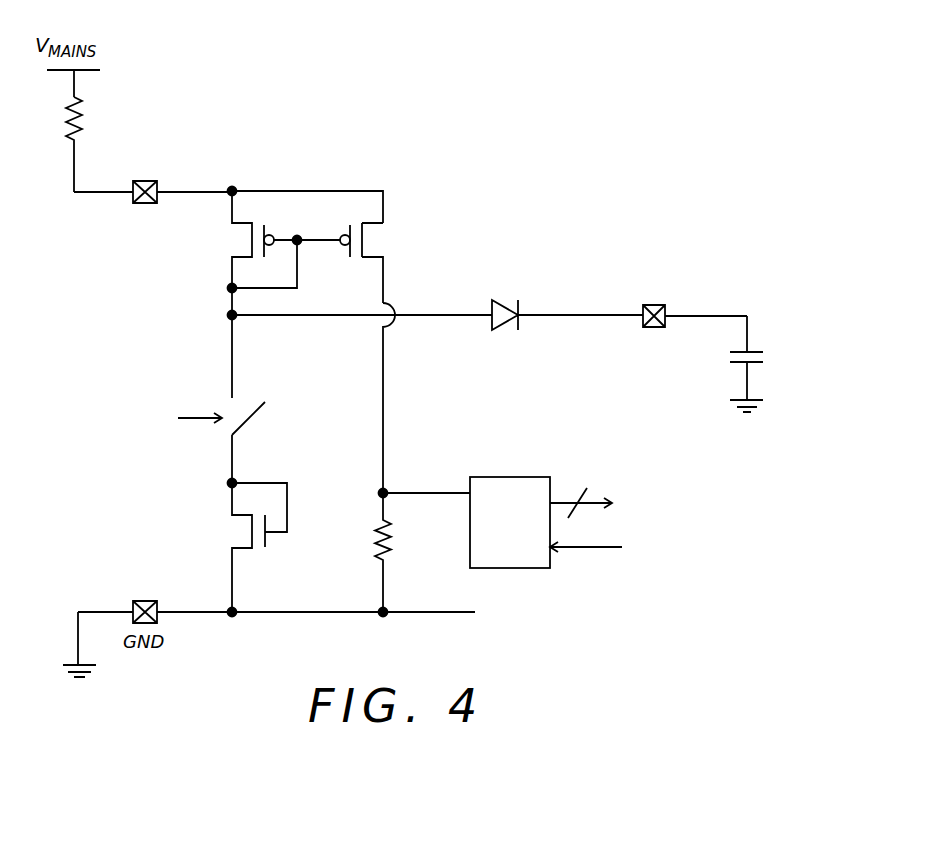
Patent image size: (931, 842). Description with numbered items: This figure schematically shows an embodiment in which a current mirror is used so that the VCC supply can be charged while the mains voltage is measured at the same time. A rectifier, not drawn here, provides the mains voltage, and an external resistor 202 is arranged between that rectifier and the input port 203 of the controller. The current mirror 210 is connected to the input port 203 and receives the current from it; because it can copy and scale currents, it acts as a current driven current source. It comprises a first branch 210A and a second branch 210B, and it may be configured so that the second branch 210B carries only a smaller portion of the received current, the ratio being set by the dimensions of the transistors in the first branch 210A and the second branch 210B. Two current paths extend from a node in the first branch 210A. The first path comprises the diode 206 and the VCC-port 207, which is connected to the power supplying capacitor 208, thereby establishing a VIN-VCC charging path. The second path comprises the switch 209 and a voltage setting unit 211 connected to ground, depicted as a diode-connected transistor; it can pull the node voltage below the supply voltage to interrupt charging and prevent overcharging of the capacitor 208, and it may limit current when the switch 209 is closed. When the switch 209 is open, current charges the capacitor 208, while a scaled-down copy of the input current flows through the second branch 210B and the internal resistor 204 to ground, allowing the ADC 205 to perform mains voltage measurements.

The external resistor 202 is at (62, 118).
The input port 203 is at (130, 203).
The internal resistor 204 is at (370, 532).
The ADC 205 is at (540, 568).
The diode 206 is at (497, 330).
The VCC-port 207 is at (645, 297).
The power supplying capacitor 208 is at (800, 380).
The switch 209 is at (215, 396).
The current mirror 210 is at (311, 272).
The first branch 210A is at (215, 242).
The second branch 210B is at (400, 240).
The voltage setting unit 211 is at (220, 533).